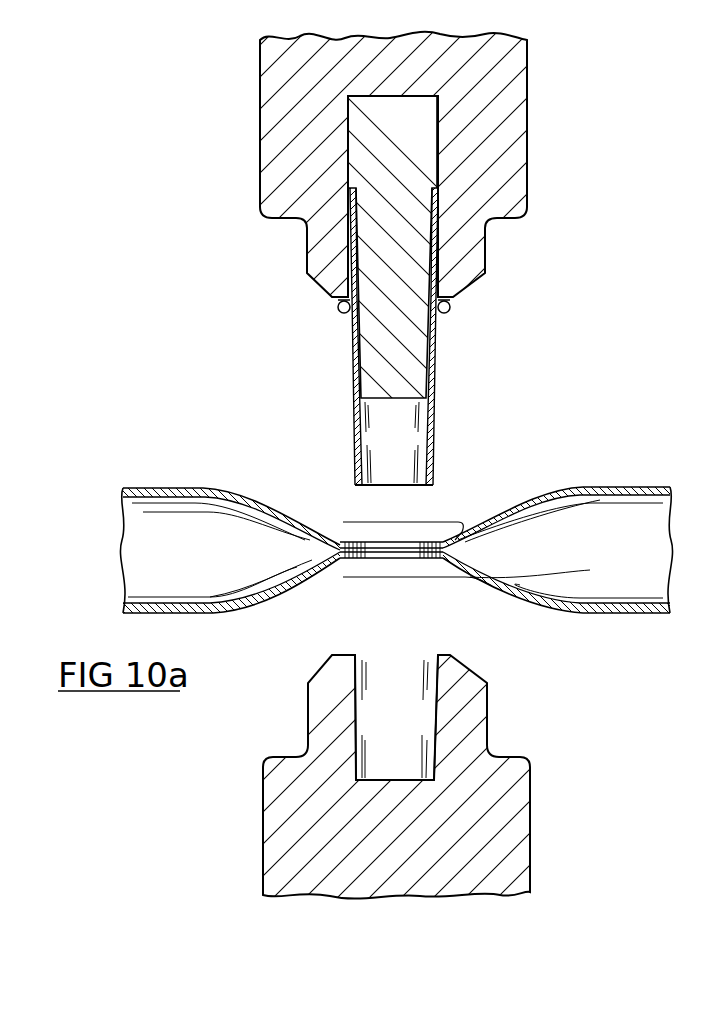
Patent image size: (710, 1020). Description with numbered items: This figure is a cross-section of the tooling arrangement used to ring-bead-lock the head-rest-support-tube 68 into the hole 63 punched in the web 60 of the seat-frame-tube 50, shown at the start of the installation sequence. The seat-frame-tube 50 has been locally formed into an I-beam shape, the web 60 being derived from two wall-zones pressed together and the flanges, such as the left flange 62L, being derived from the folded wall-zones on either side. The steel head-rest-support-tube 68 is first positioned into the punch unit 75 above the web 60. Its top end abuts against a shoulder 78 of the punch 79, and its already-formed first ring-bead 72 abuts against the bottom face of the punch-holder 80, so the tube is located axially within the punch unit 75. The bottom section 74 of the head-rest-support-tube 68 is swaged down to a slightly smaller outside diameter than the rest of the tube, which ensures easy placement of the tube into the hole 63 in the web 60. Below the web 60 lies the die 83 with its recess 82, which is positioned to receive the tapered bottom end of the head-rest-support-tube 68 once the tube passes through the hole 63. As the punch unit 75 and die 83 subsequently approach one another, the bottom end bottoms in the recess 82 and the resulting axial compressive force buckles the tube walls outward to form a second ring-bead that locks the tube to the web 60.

The punch unit 75 is at (357, 165).
The shoulder 78 is at (433, 185).
The punch 79 is at (382, 268).
The punch-holder 80 is at (467, 236).
The first ring-bead 72 is at (446, 306).
The head-rest-support-tube 68 is at (345, 363).
The bottom section 74 is at (438, 455).
The seat-frame-tube 50 is at (396, 537).
The hole 63 is at (428, 535).
The web 60 is at (362, 558).
The flange 62L is at (429, 566).
The recess 82 is at (390, 712).
The die 83 is at (467, 717).